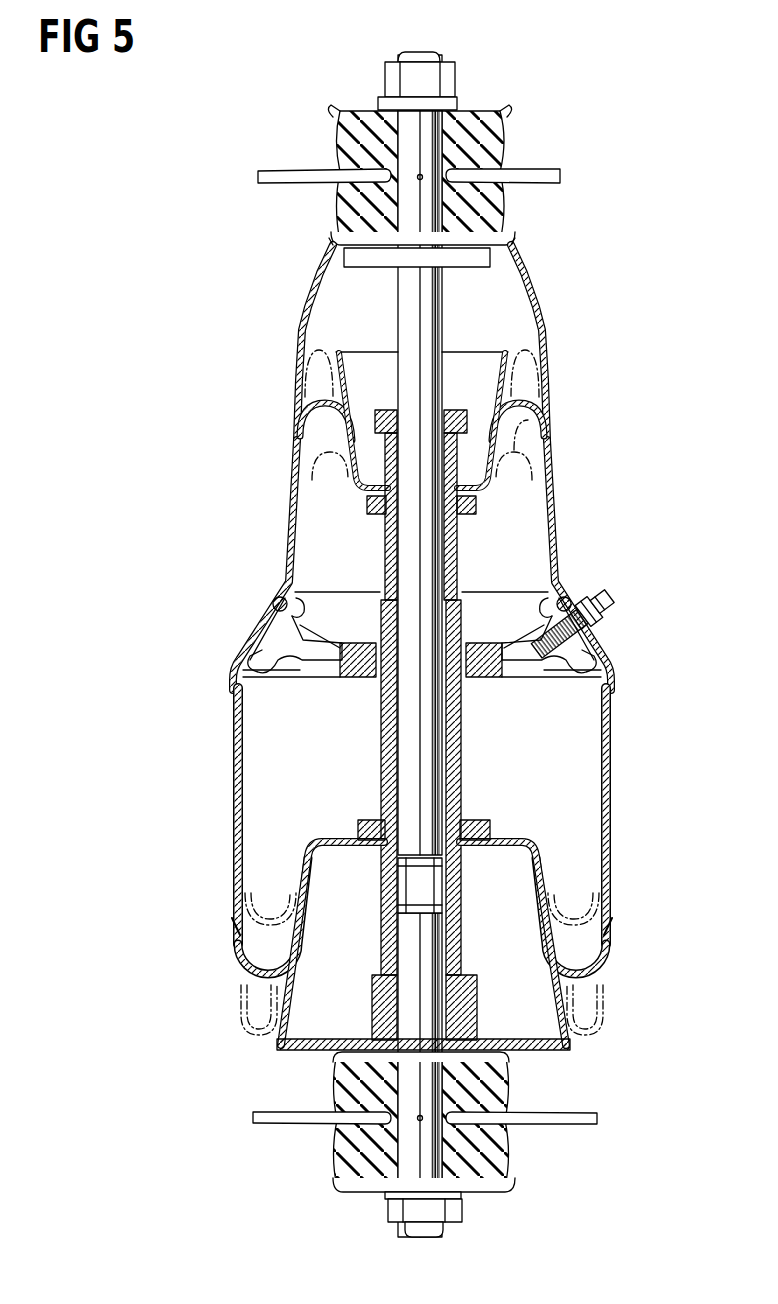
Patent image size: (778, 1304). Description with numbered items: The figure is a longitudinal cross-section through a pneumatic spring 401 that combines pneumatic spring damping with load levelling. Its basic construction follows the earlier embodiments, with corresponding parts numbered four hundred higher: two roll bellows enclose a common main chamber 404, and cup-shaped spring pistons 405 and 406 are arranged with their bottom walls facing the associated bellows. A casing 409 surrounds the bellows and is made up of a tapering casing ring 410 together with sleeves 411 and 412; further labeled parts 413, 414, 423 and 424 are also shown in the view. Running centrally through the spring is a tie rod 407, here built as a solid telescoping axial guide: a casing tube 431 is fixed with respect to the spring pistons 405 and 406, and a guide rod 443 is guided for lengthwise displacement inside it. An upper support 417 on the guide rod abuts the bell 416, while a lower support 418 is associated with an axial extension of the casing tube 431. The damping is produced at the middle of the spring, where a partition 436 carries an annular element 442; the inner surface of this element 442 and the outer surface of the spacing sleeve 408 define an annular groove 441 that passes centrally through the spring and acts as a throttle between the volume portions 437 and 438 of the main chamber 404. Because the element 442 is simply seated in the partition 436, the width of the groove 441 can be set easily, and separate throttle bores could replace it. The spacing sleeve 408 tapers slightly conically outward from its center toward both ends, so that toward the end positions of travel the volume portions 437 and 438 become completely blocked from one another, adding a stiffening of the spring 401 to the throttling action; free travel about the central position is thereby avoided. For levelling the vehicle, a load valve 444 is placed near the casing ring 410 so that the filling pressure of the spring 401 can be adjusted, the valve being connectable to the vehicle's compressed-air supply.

The pneumatic spring 401 is at (221, 684).
The main chamber 404 is at (517, 570).
The spring piston 405 is at (348, 400).
The spring piston 406 is at (318, 885).
The tie rod 407 is at (396, 742).
The spacing sleeve 408 is at (467, 545).
The casing 409 is at (277, 599).
The casing ring 410 is at (272, 638).
The sleeve 411 is at (541, 402).
The sleeve 412 is at (230, 775).
The bellows fold 413 is at (301, 958).
The upper piston wall 414 is at (497, 398).
The bell 416 is at (522, 292).
The upper support 417 is at (513, 140).
The lower support 418 is at (330, 1146).
The upper bellows 423 is at (530, 343).
The lower fold 424 is at (258, 960).
The casing tube 431 is at (462, 792).
The partition 436 is at (300, 676).
The volume portion 437 is at (514, 470).
The volume portion 438 is at (262, 822).
The annular groove 441 is at (469, 628).
The annular element 442 is at (494, 682).
The guide rod 443 is at (428, 330).
The load valve 444 is at (600, 600).